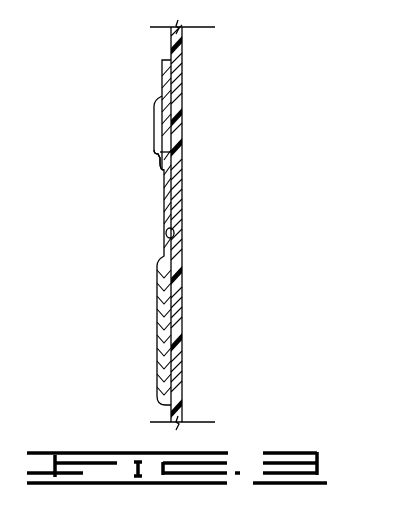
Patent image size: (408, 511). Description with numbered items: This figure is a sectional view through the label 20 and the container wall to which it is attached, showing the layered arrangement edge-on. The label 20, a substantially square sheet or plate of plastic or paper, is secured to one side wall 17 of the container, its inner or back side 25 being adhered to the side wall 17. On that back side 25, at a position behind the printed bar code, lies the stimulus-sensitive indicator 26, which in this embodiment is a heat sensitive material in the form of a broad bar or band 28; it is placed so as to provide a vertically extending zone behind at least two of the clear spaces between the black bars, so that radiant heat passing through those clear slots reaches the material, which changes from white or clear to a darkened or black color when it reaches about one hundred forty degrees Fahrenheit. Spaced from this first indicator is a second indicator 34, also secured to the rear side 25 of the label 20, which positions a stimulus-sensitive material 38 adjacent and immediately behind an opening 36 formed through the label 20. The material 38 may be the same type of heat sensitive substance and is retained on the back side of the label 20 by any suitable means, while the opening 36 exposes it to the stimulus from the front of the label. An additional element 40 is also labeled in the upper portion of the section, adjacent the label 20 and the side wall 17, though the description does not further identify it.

The side wall 17 is at (183, 215).
The label 20 is at (118, 93).
The back side 25 is at (166, 238).
The stimulus-sensitive indicator 26 is at (142, 365).
The heat sensitive material 28 is at (168, 300).
The second indicator 34 is at (182, 152).
The opening 36 is at (155, 151).
The stimulus-sensitive material 38 is at (167, 129).
The outer flange 40 is at (166, 70).